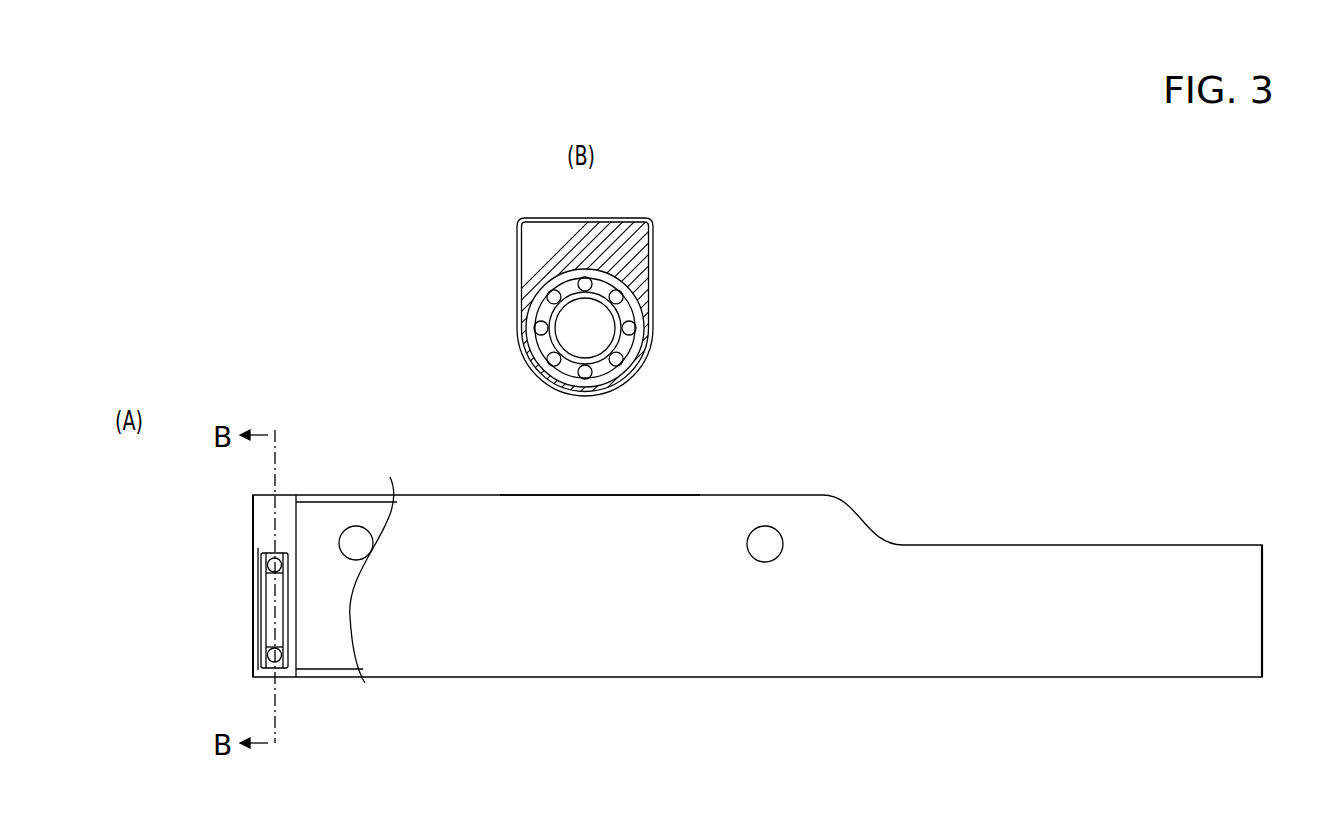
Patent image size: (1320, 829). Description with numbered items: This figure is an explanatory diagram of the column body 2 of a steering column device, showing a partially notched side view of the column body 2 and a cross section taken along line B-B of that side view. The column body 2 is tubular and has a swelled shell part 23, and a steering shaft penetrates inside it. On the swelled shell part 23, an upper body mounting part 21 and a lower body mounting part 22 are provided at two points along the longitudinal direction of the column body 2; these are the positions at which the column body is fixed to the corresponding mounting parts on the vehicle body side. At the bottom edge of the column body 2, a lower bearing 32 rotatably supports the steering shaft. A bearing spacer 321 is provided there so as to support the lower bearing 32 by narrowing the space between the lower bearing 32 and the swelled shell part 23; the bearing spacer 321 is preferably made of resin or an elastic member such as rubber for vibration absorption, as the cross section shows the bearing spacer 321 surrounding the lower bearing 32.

The column body 2 is at (803, 660).
The upper body mounting part 21 is at (784, 540).
The lower body mounting part 22 is at (373, 545).
The swelled shell part 23 is at (580, 490).
The lower bearing 32 is at (260, 548).
The bearing spacer 321 is at (265, 513).